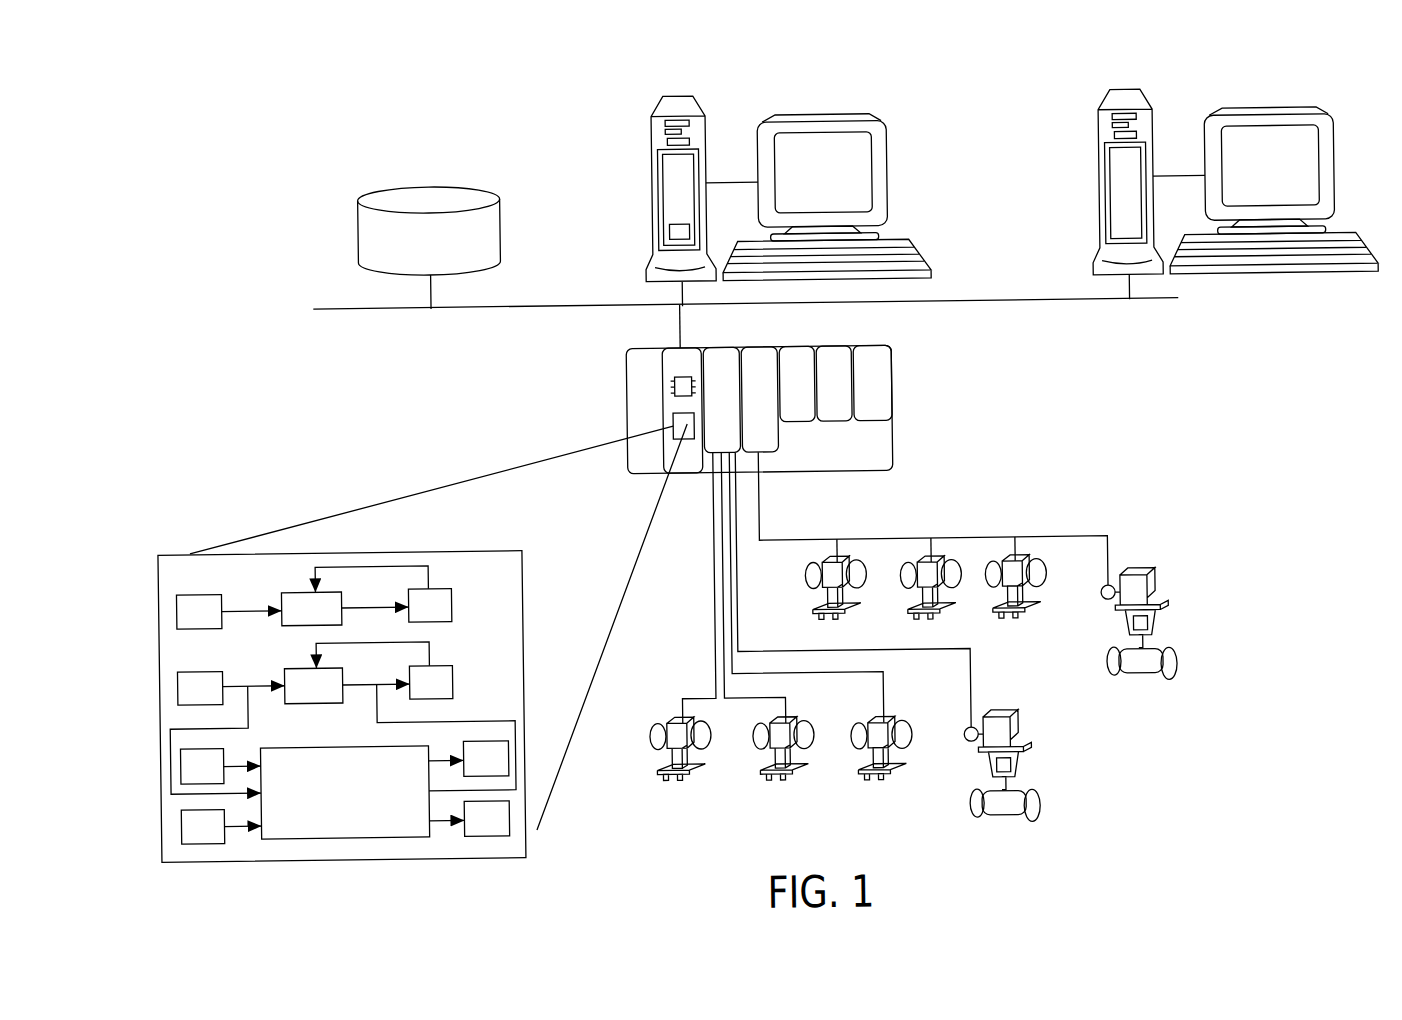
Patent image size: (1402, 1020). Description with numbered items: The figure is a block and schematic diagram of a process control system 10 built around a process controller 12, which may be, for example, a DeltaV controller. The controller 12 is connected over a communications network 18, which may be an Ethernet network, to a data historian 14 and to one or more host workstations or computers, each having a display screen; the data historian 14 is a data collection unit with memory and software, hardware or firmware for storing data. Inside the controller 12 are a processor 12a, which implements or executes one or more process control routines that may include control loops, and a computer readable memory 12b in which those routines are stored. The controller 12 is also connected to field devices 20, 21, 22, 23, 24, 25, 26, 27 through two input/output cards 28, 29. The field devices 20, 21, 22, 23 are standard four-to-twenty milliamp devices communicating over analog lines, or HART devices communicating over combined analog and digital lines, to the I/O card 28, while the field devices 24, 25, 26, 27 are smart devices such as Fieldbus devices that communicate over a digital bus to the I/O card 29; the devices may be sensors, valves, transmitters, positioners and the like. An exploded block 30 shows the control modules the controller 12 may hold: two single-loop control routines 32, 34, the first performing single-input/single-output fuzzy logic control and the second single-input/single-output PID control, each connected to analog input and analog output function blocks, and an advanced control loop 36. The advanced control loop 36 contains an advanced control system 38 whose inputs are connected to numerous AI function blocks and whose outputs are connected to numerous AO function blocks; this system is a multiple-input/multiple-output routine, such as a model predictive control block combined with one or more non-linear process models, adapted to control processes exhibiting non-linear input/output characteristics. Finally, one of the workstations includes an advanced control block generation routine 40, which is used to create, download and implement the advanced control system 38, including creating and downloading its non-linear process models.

The process control system 10 is at (988, 70).
The process controller 12 is at (713, 388).
The processor 12a is at (674, 378).
The computer readable memory 12b is at (673, 416).
The data historian 14 is at (358, 222).
The communications network 18 is at (1047, 301).
The field device 20 is at (659, 760).
The field device 21 is at (767, 763).
The field device 22 is at (865, 764).
The field device 23 is at (987, 756).
The field device 24 is at (841, 565).
The field device 25 is at (932, 566).
The field device 26 is at (1021, 567).
The field device 27 is at (1139, 578).
The input/output card 28 is at (722, 367).
The input/output card 29 is at (755, 362).
The exploded block 30 is at (462, 552).
The single-loop control routine 32 is at (178, 603).
The single-loop control routine 34 is at (178, 686).
The advanced control loop 36 is at (296, 824).
The advanced control system 38 is at (363, 838).
The advanced control block generation routine 40 is at (668, 235).